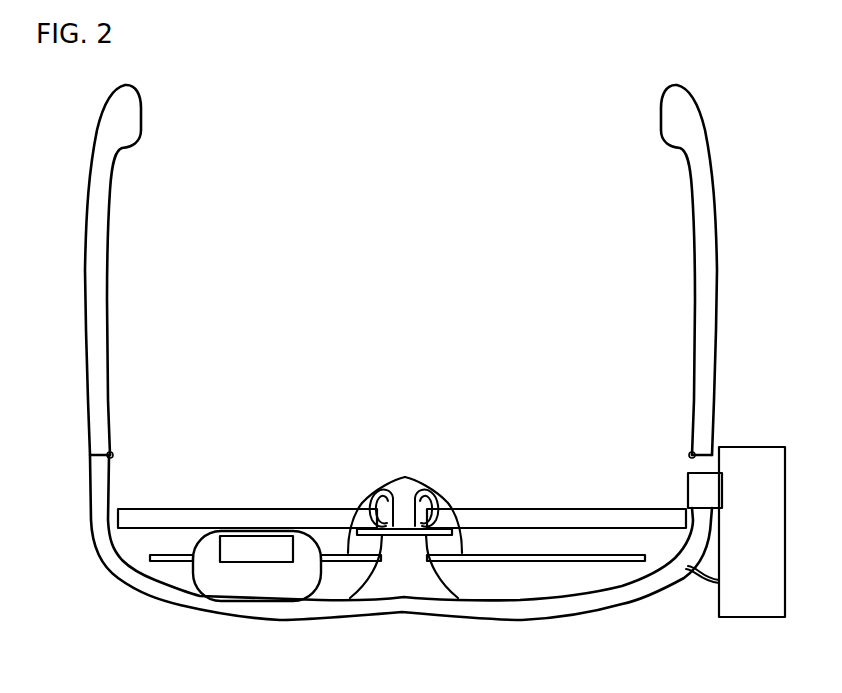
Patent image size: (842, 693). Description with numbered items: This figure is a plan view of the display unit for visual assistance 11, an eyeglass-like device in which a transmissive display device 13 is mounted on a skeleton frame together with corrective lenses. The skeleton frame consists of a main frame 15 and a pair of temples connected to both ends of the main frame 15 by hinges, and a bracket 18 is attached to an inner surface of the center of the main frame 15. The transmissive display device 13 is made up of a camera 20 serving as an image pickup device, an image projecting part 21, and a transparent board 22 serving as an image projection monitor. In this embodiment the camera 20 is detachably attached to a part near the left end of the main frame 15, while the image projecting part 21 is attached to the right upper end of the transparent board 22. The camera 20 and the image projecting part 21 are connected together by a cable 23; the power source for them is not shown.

The display unit for visual assistance 11 is at (576, 409).
The transmissive display device 13 is at (278, 588).
The main frame 15 is at (603, 606).
The bracket 18 is at (405, 578).
The camera 20 is at (755, 607).
The image projecting part 21 is at (238, 582).
The transparent board 22 is at (419, 489).
The cable 23 is at (691, 580).